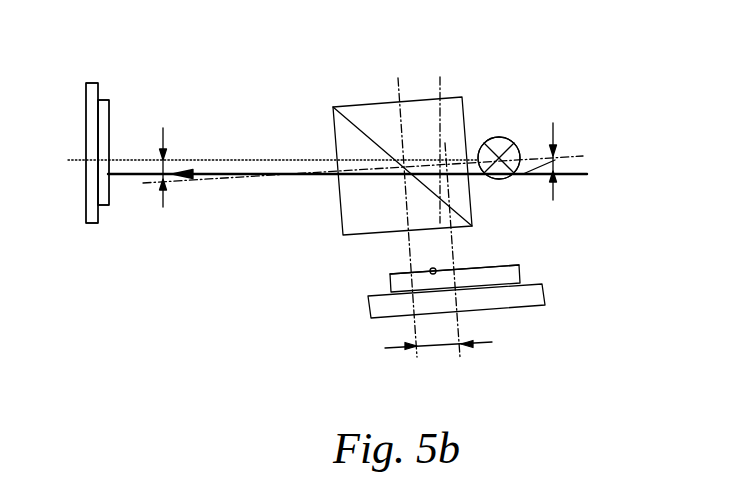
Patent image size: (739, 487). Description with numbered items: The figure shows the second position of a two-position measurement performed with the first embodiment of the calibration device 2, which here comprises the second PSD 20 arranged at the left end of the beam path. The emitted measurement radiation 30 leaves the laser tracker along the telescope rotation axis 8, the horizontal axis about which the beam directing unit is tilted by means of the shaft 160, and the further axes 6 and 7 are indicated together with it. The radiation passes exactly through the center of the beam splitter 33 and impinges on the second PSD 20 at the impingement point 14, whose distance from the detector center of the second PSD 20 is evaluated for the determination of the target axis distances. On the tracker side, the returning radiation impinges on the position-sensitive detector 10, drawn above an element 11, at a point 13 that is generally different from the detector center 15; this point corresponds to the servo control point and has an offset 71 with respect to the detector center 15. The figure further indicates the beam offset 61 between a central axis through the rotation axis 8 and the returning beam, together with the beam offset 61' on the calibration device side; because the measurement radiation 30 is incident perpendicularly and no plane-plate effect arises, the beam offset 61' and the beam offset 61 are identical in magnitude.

The calibration device 2 is at (92, 126).
The second PSD 20 is at (56, 183).
The impingement point 14 is at (63, 152).
The emitted measurement radiation 30 is at (363, 201).
The beam offset 61' is at (213, 208).
The axis 7 is at (403, 187).
The beam splitter 33 is at (379, 133).
The telescope rotation axis 8 is at (538, 117).
The shaft 160 is at (540, 98).
The axis 6 is at (591, 149).
The beam offset 61 is at (601, 175).
The position-sensitive detector 10 is at (526, 321).
The detector substrate 11 is at (406, 286).
The detector center 15 is at (514, 254).
The impingement point 13 is at (384, 262).
The offset 71 is at (422, 366).